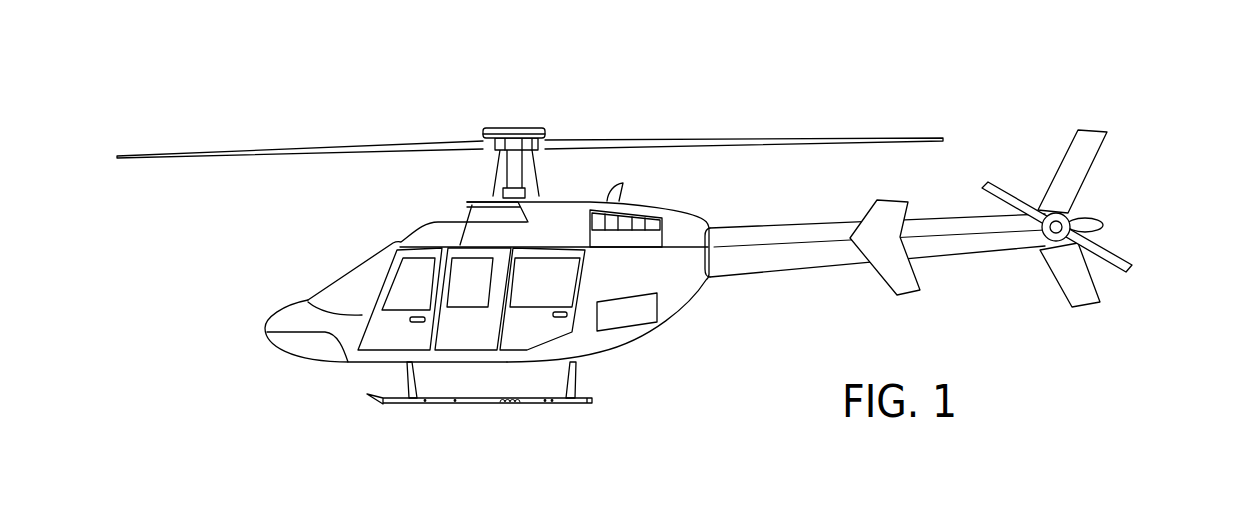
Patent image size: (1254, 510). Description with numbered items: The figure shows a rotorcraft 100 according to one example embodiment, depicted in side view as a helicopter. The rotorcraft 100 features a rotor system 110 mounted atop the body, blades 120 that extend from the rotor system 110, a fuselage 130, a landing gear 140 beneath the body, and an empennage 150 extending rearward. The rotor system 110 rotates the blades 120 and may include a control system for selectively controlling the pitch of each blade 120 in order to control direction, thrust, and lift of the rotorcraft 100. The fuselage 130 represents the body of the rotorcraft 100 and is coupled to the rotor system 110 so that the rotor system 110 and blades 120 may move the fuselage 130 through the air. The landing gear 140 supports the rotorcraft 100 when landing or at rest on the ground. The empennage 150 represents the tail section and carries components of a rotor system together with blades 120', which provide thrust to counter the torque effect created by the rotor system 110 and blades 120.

The rotorcraft 100 is at (363, 85).
The rotor system 110 is at (512, 126).
The blades 120 is at (530, 120).
The blades 120' is at (1097, 218).
The fuselage 130 is at (307, 362).
The landing gear 140 is at (458, 405).
The empennage 150 is at (788, 272).